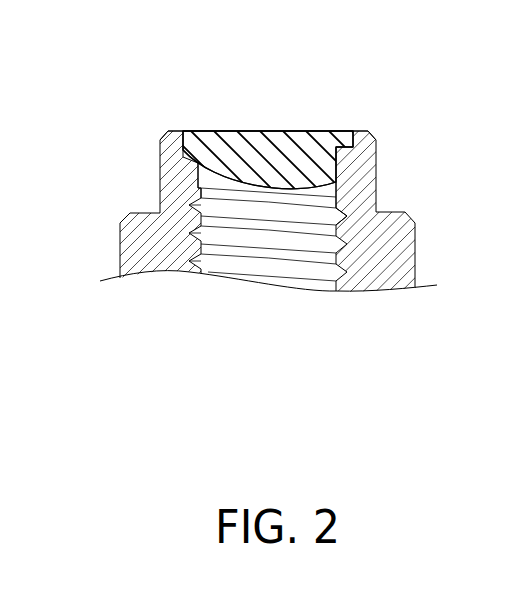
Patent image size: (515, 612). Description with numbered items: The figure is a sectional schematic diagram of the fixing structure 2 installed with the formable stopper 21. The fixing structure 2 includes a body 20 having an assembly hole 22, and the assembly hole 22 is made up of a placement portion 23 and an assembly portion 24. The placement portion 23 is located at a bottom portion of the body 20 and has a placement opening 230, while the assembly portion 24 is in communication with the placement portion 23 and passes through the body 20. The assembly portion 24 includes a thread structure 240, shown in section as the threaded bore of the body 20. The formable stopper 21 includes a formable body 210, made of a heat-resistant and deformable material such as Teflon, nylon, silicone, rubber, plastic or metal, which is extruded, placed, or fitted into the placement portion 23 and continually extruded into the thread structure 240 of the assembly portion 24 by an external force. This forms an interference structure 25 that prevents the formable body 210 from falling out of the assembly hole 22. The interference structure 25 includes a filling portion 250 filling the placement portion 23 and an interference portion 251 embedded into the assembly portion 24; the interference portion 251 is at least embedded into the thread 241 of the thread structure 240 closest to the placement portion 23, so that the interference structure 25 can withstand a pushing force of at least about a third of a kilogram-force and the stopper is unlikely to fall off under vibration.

The fixing structure 2 is at (28, 38).
The body 20 is at (160, 242).
The formable stopper 21 is at (203, 108).
The formable body 210 is at (263, 163).
The assembly hole 22 is at (376, 353).
The placement portion 23 is at (220, 149).
The placement opening 230 is at (216, 147).
The assembly portion 24 is at (270, 268).
The thread structure 240 is at (199, 184).
The thread 241 is at (345, 203).
The interference structure 25 is at (417, 58).
The filling portion 250 is at (291, 142).
The interference portion 251 is at (335, 158).